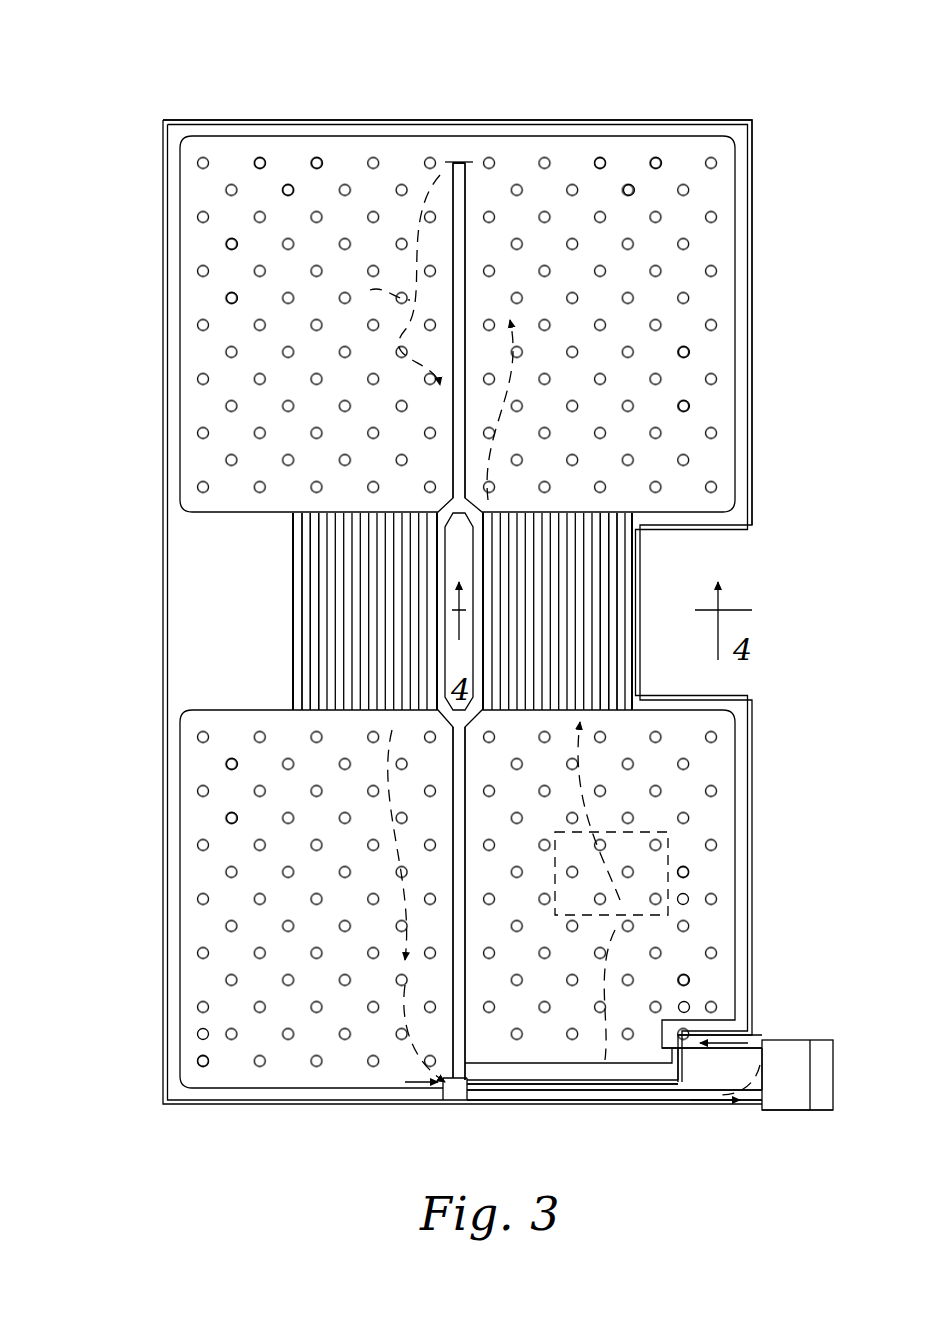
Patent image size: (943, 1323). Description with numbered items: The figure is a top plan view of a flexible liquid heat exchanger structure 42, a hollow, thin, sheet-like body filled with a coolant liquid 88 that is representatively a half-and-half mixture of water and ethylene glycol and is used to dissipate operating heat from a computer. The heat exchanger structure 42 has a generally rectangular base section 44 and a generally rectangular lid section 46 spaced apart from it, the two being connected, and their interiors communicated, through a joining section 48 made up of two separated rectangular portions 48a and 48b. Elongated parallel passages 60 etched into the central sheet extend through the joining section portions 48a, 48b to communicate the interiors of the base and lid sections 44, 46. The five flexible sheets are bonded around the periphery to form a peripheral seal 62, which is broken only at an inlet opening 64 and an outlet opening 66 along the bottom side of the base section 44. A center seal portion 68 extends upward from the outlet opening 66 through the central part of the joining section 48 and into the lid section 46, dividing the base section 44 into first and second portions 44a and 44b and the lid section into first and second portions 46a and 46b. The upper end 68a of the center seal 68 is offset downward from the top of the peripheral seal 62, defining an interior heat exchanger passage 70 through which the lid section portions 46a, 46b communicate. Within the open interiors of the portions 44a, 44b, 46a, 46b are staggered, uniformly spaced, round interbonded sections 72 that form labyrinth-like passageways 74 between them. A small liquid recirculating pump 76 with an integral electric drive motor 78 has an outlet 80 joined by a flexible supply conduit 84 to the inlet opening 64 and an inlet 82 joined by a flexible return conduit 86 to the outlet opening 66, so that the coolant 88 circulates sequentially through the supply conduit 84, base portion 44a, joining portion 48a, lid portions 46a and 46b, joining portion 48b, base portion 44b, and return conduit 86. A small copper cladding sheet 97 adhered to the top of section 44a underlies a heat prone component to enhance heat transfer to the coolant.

The heat exchanger structure 42 is at (753, 85).
The base section 44 is at (757, 932).
The first base section portion 44a is at (750, 790).
The second base section portion 44b is at (172, 885).
The lid section 46 is at (757, 237).
The first lid section portion 46a is at (750, 300).
The second lid section portion 46b is at (172, 375).
The joining section 48 is at (270, 625).
The first joining section portion 48a is at (642, 568).
The second joining section portion 48b is at (277, 580).
The elongated parallel passages 60 is at (335, 690).
The peripheral seal 62 is at (515, 130).
The inlet opening 64 is at (672, 1092).
The outlet opening 66 is at (462, 1105).
The center seal portion 68 is at (460, 245).
The upper end of center seal 68a is at (455, 152).
The interior heat exchanger passage 70 is at (459, 150).
The interbonded sections 72 is at (317, 157).
The labyrinth-like passageways 74 is at (226, 300).
The liquid recirculating pump 76 is at (772, 1110).
The electric drive motor 78 is at (835, 1100).
The pump outlet 80 is at (770, 1048).
The pump inlet 82 is at (795, 1110).
The flexible supply conduit 84 is at (762, 1070).
The flexible return conduit 86 is at (530, 1102).
The liquid coolant 88 is at (485, 176).
The metallic cladding sheet 97 is at (740, 832).